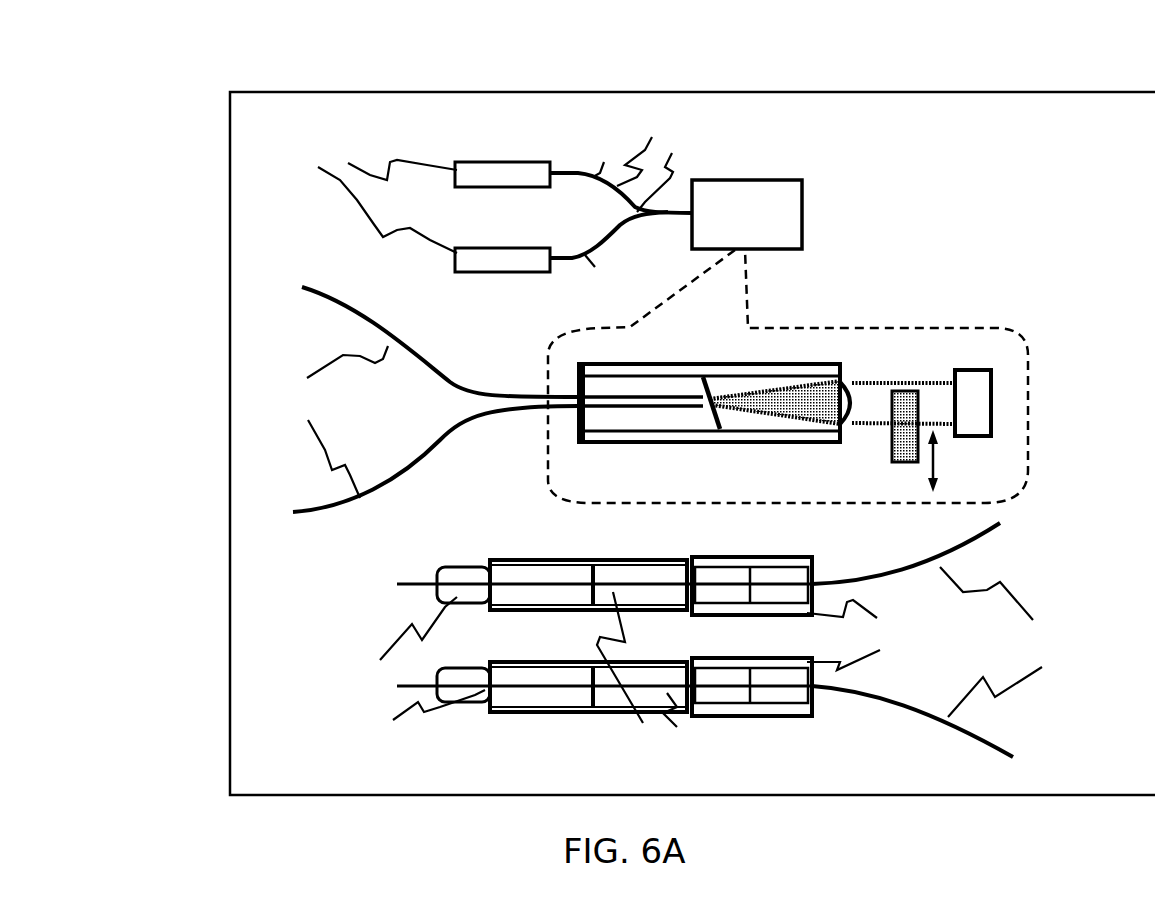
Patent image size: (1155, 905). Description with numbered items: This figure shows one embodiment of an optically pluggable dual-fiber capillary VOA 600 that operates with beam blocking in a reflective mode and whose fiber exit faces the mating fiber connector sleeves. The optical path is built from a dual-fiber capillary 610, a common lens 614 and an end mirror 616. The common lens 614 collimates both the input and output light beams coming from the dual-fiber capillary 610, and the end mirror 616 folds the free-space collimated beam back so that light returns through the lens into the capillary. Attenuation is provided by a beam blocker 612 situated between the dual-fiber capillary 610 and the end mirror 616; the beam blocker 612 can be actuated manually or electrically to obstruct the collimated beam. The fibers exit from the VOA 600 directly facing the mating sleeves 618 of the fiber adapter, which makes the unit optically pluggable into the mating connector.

The pluggable VOA assembly 600 is at (692, 417).
The dual-fiber capillary 610 is at (709, 435).
The beam blocker 612 is at (986, 449).
The common lens 614 is at (832, 345).
The end mirror 616 is at (1003, 359).
The mating sleeves 618 is at (532, 560).